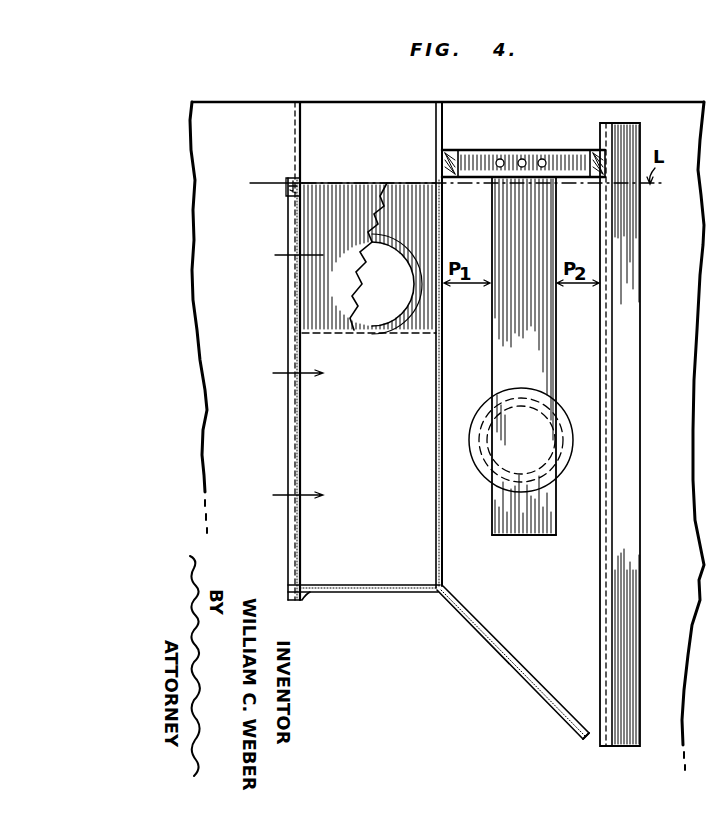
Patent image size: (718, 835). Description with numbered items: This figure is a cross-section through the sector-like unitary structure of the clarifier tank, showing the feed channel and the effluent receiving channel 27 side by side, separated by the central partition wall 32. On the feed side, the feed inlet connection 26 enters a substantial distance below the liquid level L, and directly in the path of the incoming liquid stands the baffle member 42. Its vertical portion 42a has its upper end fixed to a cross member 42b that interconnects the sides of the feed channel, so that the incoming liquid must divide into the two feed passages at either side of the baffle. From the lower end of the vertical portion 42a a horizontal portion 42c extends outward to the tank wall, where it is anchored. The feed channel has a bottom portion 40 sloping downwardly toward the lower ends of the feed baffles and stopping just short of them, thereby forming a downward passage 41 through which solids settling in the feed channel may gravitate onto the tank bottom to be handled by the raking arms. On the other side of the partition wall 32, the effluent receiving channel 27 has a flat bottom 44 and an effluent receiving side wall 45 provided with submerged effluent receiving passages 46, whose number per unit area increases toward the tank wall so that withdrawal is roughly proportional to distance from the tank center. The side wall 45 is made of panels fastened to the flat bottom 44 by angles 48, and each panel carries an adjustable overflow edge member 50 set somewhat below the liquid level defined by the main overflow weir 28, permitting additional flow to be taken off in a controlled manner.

The feed inlet connection 26 is at (557, 445).
The effluent receiving channel 27 is at (354, 419).
The overflow weir 28 is at (330, 182).
The central partition wall 32 is at (436, 393).
The bottom portion 40 is at (494, 642).
The downward passage 41 is at (586, 736).
The baffle member 42 is at (574, 344).
The vertical portion 42a is at (497, 362).
The cross member 42b is at (523, 142).
The horizontal portion 42c is at (501, 537).
The flat bottom 44 is at (370, 585).
The effluent receiving side wall 45 is at (297, 537).
The effluent receiving passages 46 is at (300, 256).
The angles 48 is at (300, 600).
The adjustable overflow edge member 50 is at (290, 190).